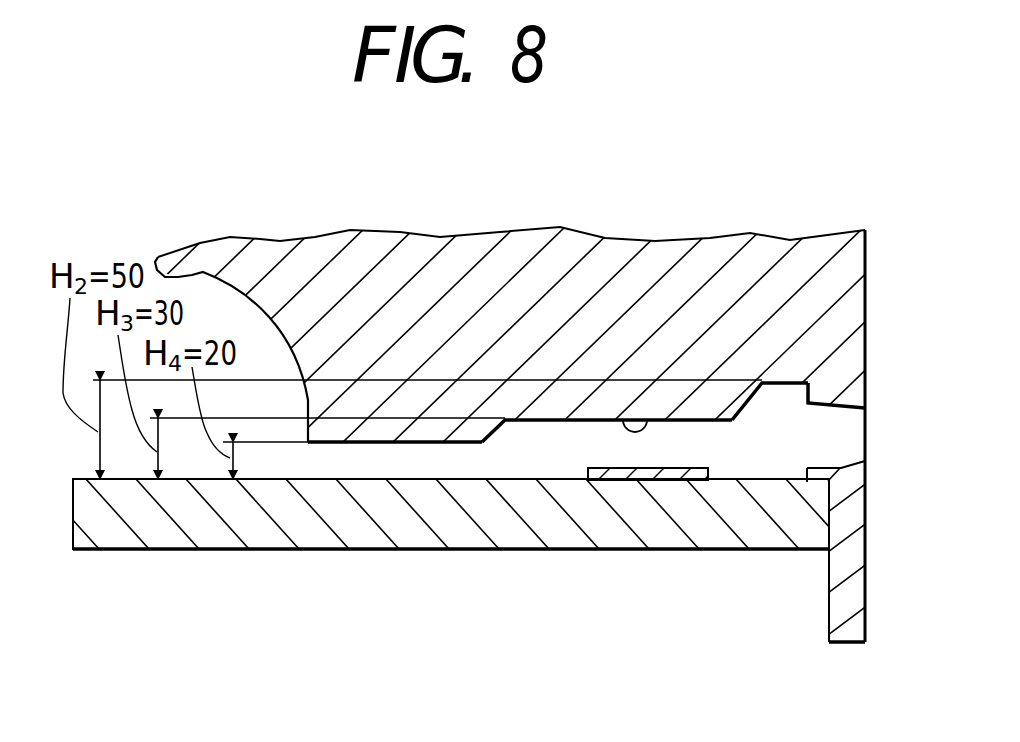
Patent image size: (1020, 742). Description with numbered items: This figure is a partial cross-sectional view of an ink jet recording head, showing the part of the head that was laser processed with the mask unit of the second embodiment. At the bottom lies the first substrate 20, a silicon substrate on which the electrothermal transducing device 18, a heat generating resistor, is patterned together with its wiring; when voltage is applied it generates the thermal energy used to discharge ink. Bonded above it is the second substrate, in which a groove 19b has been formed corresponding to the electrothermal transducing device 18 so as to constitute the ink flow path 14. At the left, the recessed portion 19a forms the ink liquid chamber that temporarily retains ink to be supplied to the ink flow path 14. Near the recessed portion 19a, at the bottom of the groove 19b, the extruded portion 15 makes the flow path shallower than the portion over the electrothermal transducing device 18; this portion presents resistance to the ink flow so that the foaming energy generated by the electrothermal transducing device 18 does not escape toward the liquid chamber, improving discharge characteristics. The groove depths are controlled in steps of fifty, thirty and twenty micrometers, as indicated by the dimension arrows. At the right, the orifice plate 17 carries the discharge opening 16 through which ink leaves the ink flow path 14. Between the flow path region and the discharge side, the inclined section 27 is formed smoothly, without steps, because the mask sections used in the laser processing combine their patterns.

The ink flow path 14 is at (470, 465).
The extruded portion 15 is at (370, 445).
The discharge opening 16 is at (845, 440).
The orifice plate 17 is at (835, 647).
The electrothermal transducing device 18 is at (630, 481).
The recessed portion 19a is at (158, 257).
The groove 19b is at (628, 419).
The first substrate 20 is at (170, 551).
The inclined section 27 is at (746, 408).